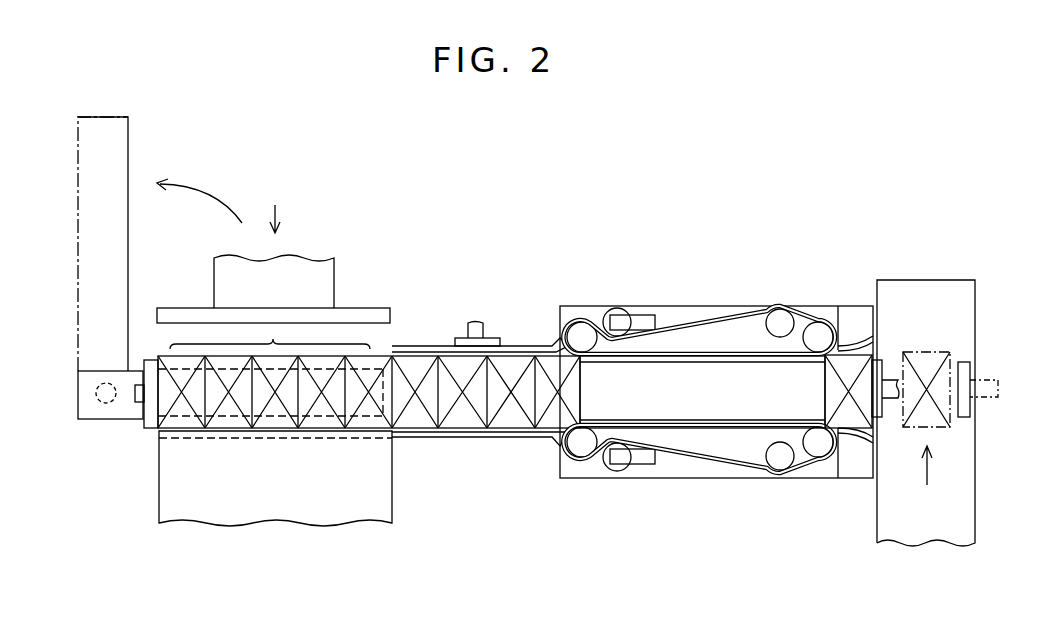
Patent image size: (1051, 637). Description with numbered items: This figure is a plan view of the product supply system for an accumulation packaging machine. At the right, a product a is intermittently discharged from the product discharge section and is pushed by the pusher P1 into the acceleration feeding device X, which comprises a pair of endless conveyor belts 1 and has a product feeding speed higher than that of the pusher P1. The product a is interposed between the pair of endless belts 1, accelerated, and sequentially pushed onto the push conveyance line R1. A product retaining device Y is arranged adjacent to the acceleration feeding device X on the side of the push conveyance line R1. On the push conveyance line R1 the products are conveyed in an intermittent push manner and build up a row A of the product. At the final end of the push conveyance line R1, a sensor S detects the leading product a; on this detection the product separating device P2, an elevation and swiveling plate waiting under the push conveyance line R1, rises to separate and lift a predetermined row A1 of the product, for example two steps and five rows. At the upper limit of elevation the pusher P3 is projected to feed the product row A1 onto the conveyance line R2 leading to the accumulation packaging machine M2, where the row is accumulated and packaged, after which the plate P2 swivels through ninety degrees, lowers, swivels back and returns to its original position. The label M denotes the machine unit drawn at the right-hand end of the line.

The pusher P1 is at (983, 383).
The product separating device (elevation and swiveling plate) P2 is at (128, 403).
The pusher P3 is at (320, 277).
The sensor S is at (136, 386).
The row of the product A is at (380, 340).
The product row A1 is at (270, 335).
The product retaining device Y is at (522, 343).
The acceleration feeding device X is at (658, 305).
The endless conveyor belts 1 is at (701, 323).
The product a is at (922, 417).
The push conveyance line R1 is at (468, 420).
The conveyance line R2 is at (352, 480).
The motor M is at (932, 300).
The accumulation packaging machine M2 is at (300, 528).